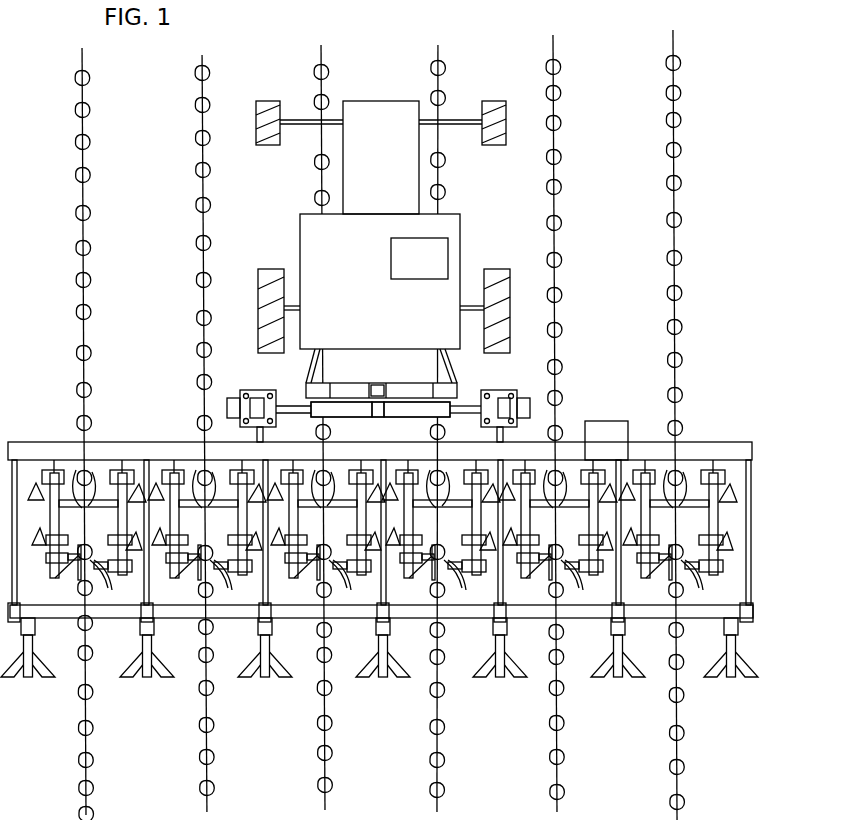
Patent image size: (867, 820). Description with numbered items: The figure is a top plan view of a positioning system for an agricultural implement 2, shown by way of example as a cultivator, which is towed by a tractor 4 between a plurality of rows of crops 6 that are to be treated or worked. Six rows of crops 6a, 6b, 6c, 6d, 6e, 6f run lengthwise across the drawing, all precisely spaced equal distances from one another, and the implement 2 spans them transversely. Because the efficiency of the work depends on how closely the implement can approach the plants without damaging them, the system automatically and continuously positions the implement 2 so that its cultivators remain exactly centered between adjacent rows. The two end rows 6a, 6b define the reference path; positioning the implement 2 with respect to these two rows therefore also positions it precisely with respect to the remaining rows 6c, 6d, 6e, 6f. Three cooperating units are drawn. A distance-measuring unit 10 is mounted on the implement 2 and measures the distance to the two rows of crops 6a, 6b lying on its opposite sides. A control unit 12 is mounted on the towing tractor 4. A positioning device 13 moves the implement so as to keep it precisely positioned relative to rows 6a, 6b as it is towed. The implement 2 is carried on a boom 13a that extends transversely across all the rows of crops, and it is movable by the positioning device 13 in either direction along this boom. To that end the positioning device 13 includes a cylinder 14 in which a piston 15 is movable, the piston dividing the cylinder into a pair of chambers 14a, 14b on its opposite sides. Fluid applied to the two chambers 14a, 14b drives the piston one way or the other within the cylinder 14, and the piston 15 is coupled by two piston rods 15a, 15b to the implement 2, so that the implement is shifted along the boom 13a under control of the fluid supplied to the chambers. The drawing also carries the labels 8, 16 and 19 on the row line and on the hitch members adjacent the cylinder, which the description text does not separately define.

The agricultural implement 2 is at (55, 433).
The tractor 4 is at (297, 235).
The rows of crops 6 is at (541, 211).
The end row of crops 6a is at (683, 151).
The end row of crops 6b is at (565, 128).
The row of crops 6c is at (443, 70).
The row of crops 6d is at (313, 103).
The row of crops 6e is at (207, 77).
The row of crops 6f is at (88, 110).
The row line 8 is at (694, 425).
The distance-measuring unit 10 is at (612, 418).
The control unit 12 is at (443, 262).
The positioning device 13 is at (285, 395).
The boom 13a is at (167, 442).
The cylinder 14 is at (403, 410).
The chamber 14a is at (366, 428).
The chamber 14b is at (408, 412).
The piston 15 is at (380, 414).
The piston rod 15a is at (304, 406).
The piston rod 15b is at (467, 405).
The right hitch bracket 16 is at (524, 399).
The cross bar 19 is at (381, 373).